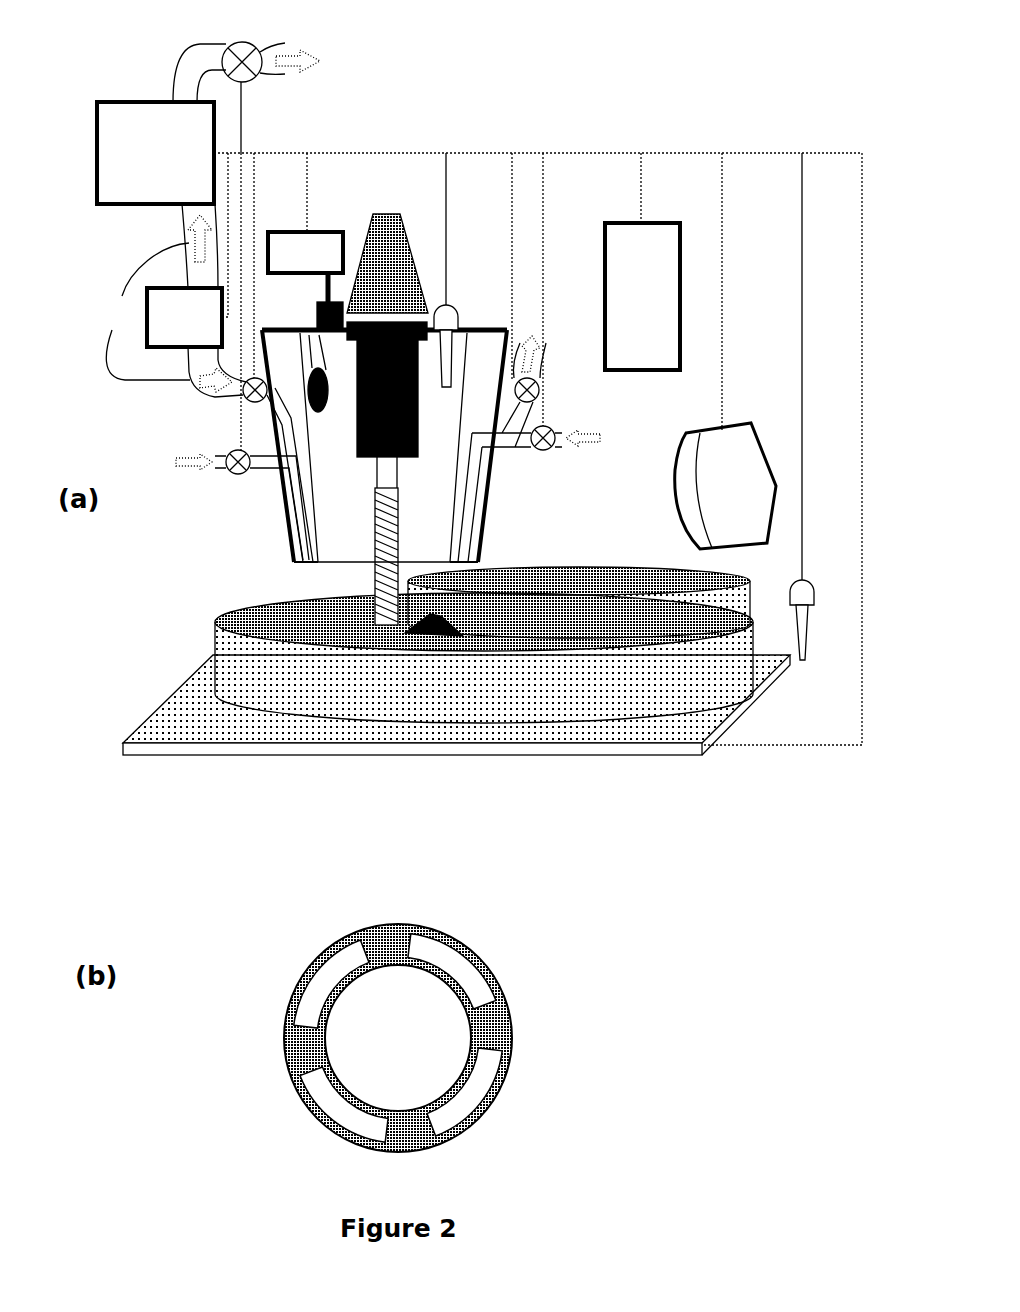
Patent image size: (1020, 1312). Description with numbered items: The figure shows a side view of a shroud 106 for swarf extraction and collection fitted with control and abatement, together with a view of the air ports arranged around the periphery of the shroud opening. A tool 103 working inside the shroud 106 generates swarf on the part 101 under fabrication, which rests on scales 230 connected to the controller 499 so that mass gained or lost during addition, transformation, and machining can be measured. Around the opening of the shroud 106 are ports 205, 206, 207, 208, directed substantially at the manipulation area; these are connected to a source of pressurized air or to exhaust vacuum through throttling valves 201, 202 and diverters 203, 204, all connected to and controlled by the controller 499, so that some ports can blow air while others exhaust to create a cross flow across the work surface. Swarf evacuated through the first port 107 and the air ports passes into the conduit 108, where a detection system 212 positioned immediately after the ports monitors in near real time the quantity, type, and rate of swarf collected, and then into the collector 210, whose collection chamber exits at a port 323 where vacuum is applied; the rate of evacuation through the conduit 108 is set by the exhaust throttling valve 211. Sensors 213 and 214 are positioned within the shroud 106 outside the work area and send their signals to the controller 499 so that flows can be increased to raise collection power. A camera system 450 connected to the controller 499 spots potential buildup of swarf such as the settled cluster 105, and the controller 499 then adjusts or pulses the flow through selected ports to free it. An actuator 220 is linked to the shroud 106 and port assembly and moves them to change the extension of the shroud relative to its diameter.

The part 101 is at (747, 685).
The tool 103 is at (372, 575).
The settled cluster 105 is at (455, 637).
The shroud 106 is at (285, 536).
The first port 107 is at (318, 330).
The conduit 108 is at (158, 292).
The throttling valve 201 is at (548, 450).
The throttling valve 202 is at (222, 478).
The diverter 203 is at (540, 387).
The diverter 204 is at (246, 398).
The port 205 is at (460, 568).
The port 206 is at (298, 568).
The port 207 is at (315, 1108).
The port 208 is at (498, 1080).
The collector 210 is at (155, 153).
The exhaust throttling valve 211 is at (246, 42).
The detection system 212 is at (184, 317).
The sensor 213 is at (460, 318).
The sensor 214 is at (814, 592).
The actuator 220 is at (305, 281).
The scales 230 is at (167, 697).
The port 323 is at (175, 90).
The camera system 450 is at (770, 418).
The controller 499 is at (642, 296).